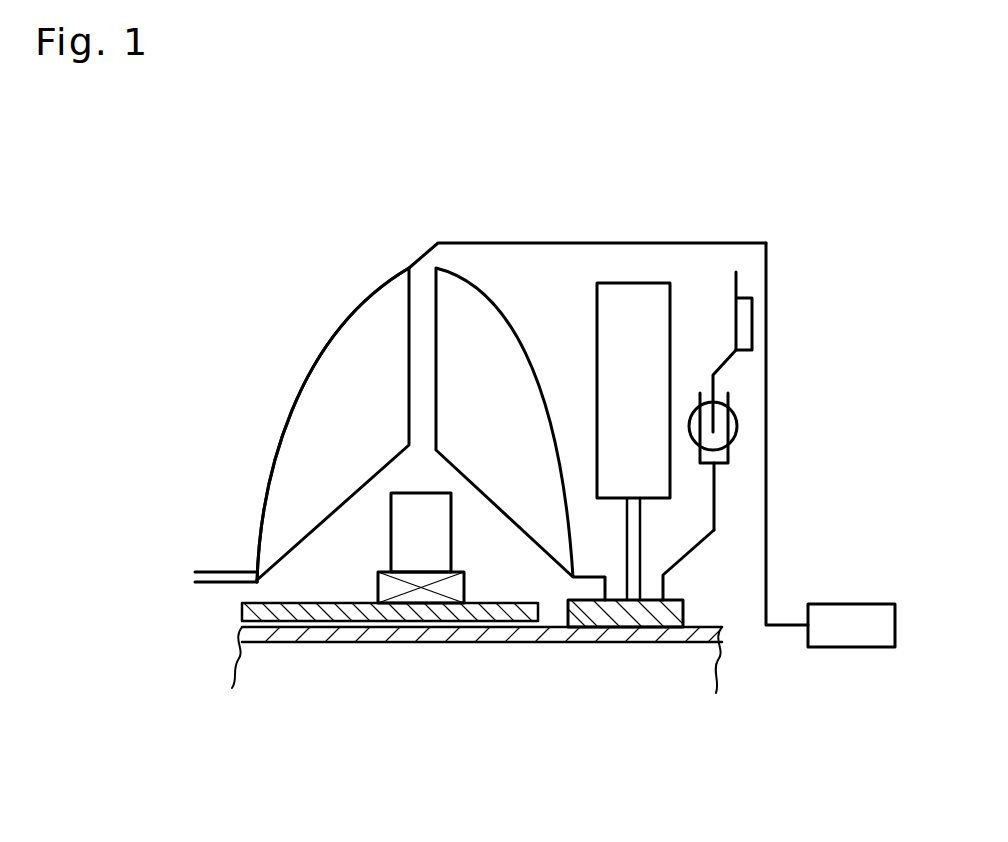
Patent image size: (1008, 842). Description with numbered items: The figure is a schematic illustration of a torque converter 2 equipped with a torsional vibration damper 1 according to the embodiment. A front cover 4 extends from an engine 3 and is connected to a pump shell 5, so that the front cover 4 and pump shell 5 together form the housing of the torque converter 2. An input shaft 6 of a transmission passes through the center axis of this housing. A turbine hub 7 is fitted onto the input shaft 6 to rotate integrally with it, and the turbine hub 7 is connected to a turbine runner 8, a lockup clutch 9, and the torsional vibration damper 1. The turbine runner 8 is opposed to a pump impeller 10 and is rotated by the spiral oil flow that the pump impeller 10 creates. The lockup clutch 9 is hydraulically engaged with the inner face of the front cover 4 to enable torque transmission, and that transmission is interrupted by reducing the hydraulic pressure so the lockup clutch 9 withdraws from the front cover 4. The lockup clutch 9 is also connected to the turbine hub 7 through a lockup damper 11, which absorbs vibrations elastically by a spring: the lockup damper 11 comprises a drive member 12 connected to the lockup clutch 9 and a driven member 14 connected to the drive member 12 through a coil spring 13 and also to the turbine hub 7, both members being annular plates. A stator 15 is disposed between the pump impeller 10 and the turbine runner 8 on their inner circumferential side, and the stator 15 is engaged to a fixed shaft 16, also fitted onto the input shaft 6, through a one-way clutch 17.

The torsional vibration damper 1 is at (573, 320).
The torque converter 2 is at (333, 233).
The engine 3 is at (860, 648).
The front cover 4 is at (767, 418).
The pump shell 5 is at (303, 373).
The input shaft 6 is at (718, 630).
The turbine hub 7 is at (617, 617).
The turbine runner 8 is at (465, 297).
The lockup clutch 9 is at (737, 295).
The pump impeller 10 is at (290, 445).
The lockup damper 11 is at (747, 494).
The drive member 12 is at (728, 365).
The coil spring 13 is at (715, 445).
The driven member 14 is at (707, 540).
The stator 15 is at (403, 517).
The fixed shaft 16 is at (250, 612).
The one-way clutch 17 is at (422, 597).